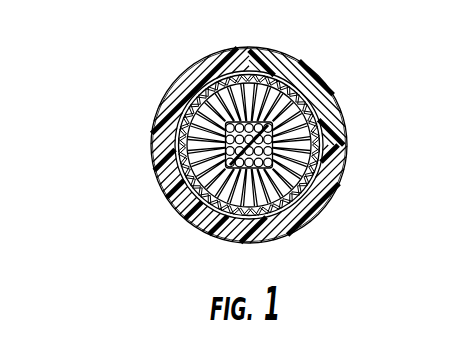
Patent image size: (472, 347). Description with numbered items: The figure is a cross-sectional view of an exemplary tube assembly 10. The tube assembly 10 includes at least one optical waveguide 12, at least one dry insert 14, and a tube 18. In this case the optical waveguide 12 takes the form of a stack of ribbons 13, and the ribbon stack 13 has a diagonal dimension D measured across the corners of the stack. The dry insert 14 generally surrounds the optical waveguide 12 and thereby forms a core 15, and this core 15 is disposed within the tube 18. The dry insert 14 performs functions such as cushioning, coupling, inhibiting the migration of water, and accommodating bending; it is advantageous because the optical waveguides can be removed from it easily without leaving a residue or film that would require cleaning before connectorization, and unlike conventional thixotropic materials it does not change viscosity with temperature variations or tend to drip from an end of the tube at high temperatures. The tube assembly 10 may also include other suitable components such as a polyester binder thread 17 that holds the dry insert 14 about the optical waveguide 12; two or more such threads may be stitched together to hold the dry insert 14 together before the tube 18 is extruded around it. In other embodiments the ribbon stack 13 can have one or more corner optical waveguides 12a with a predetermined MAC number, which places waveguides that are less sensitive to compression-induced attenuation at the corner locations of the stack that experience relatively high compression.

The tube assembly 10 is at (163, 53).
The optical waveguide 12 is at (182, 135).
The corner optical waveguide 12a is at (292, 188).
The ribbon stack 13 is at (280, 85).
The dry insert 14 is at (344, 167).
The core 15 is at (166, 192).
The polyester binder thread 17 is at (240, 56).
The tube 18 is at (178, 131).
The diagonal dimension D is at (325, 127).